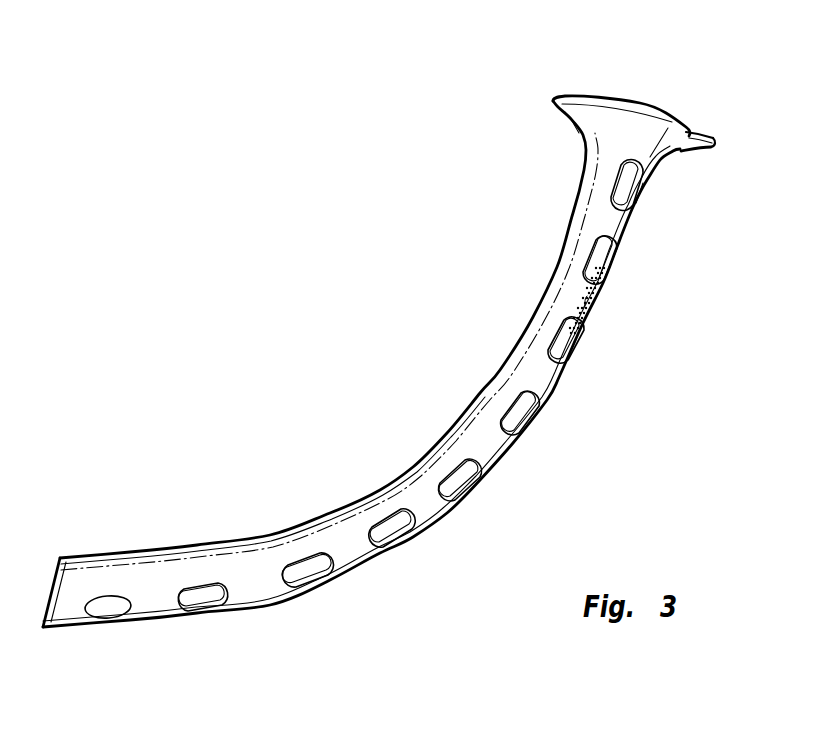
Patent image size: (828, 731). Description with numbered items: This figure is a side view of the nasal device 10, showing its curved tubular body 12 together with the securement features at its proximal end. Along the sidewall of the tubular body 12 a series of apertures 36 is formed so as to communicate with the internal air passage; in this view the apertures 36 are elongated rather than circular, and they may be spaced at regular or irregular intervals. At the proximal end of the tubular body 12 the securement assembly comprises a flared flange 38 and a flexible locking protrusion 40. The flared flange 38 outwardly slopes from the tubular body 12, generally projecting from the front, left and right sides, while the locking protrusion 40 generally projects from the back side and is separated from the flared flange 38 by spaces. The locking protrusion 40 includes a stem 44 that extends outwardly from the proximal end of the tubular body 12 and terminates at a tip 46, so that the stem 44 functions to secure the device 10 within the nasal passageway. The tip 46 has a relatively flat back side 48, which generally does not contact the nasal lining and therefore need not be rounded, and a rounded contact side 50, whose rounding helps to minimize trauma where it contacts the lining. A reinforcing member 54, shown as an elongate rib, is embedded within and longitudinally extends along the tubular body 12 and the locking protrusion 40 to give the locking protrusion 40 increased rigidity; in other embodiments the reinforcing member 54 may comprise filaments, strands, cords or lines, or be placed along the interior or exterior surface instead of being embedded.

The device 10 is at (396, 316).
The tubular body 12 is at (415, 467).
The apertures 36 is at (333, 575).
The flared flange 38 is at (613, 115).
The flexible locking protrusion 40 is at (706, 110).
The stem 44 is at (684, 138).
The tip 46 is at (696, 136).
The back side 48 is at (690, 153).
The contact side 50 is at (714, 138).
The reinforcing member 54 is at (609, 308).